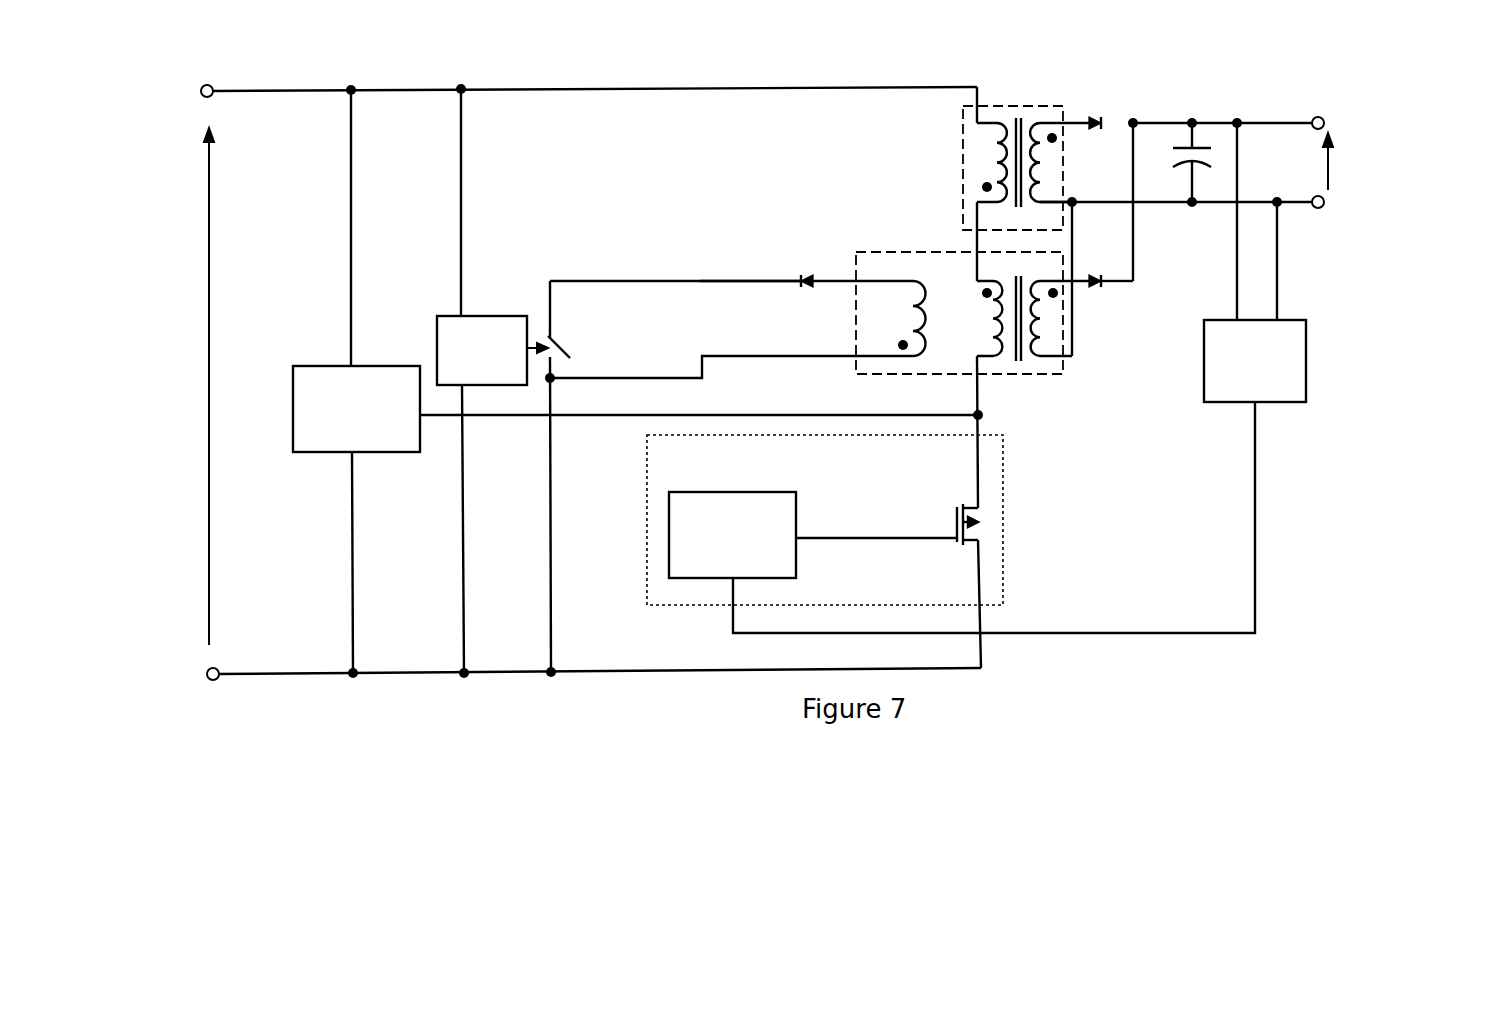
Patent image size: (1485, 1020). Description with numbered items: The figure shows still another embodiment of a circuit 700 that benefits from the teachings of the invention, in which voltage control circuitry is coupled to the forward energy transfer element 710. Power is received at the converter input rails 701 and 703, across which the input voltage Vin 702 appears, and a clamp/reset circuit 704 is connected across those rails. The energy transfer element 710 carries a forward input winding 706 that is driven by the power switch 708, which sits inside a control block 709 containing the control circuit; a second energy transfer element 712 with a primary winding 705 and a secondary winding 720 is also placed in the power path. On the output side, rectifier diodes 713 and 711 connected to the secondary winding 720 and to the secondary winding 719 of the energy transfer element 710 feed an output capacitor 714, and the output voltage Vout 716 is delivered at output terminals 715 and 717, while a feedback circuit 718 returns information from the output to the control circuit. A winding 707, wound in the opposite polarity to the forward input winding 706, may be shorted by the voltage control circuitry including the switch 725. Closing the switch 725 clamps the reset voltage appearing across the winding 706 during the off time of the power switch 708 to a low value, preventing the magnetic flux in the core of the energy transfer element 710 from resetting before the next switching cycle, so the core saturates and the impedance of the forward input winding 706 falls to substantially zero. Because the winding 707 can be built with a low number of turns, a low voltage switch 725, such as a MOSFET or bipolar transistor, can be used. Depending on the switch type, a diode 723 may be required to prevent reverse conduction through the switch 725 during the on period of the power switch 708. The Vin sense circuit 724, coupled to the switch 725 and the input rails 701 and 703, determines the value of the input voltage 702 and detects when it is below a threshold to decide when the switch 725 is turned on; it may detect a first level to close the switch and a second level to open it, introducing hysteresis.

The power converter 700 is at (322, 51).
The converter input rail 701 is at (220, 103).
The input voltage Vin 702 is at (172, 368).
The converter input rail 703 is at (205, 677).
The clamp / reset circuit 704 is at (312, 365).
The primary winding of first transformer 705 is at (992, 153).
The forward input winding 706 is at (987, 313).
The winding 707 is at (908, 313).
The power switch 708 is at (985, 540).
The control circuit block 709 is at (1002, 452).
The forward energy transfer element 710 is at (1058, 377).
The second rectifier diode 711 is at (1097, 292).
The first transformer 712 is at (1037, 97).
The first rectifier diode 713 is at (1100, 117).
The output capacitor 714 is at (1200, 140).
The first output terminal 715 is at (1326, 115).
The output voltage Vout 716 is at (1400, 158).
The second output terminal 717 is at (1330, 208).
The feedback circuit 718 is at (1280, 410).
The secondary winding of second transformer 719 is at (1043, 328).
The secondary winding of first transformer 720 is at (1042, 170).
The diode 723 is at (805, 270).
The Vin sense circuit 724 is at (462, 312).
The switch 725 is at (572, 340).